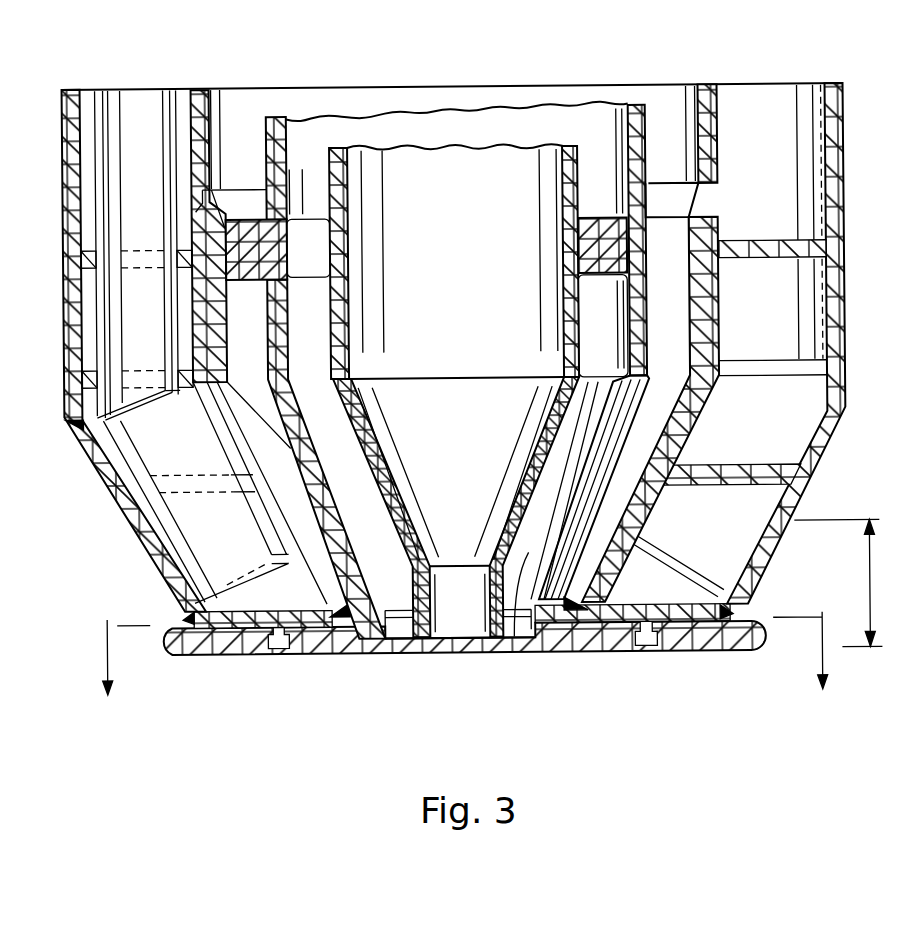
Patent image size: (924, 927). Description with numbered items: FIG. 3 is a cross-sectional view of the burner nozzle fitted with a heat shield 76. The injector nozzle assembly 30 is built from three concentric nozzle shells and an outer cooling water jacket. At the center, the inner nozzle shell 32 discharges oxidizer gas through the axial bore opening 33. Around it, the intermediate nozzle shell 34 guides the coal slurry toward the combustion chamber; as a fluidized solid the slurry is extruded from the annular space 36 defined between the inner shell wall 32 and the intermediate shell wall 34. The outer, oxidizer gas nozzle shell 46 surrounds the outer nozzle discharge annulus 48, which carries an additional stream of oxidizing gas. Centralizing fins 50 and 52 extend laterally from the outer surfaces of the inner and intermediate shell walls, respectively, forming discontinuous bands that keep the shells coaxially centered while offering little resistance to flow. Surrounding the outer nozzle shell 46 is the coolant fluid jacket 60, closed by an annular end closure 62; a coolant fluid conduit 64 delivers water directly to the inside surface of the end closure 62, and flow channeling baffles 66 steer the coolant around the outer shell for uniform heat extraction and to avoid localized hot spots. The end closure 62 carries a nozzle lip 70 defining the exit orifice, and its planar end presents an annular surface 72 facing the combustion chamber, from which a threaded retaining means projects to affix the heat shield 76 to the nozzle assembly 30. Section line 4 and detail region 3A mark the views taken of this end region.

The injector nozzle assembly 30 is at (862, 130).
The inner nozzle shell 32 is at (385, 392).
The axial bore opening 33 is at (452, 628).
The intermediate nozzle shell 34 is at (521, 473).
The annular space 36 is at (508, 640).
The outer nozzle shell 46 is at (238, 405).
The outer nozzle discharge annulus 48 is at (380, 640).
The centralizing fins 50 is at (311, 246).
The centralizing fins 52 is at (663, 217).
The coolant fluid jacket 60 is at (150, 563).
The annular end closure 62 is at (235, 598).
The coolant fluid conduit 64 is at (222, 531).
The flow channeling baffles 66 is at (812, 352).
The nozzle lip 70 is at (546, 612).
The annular surface 72 is at (727, 619).
The heat shield 76 is at (303, 659).
The section line 4- 4 is at (462, 668).
The detail region 3A is at (842, 583).